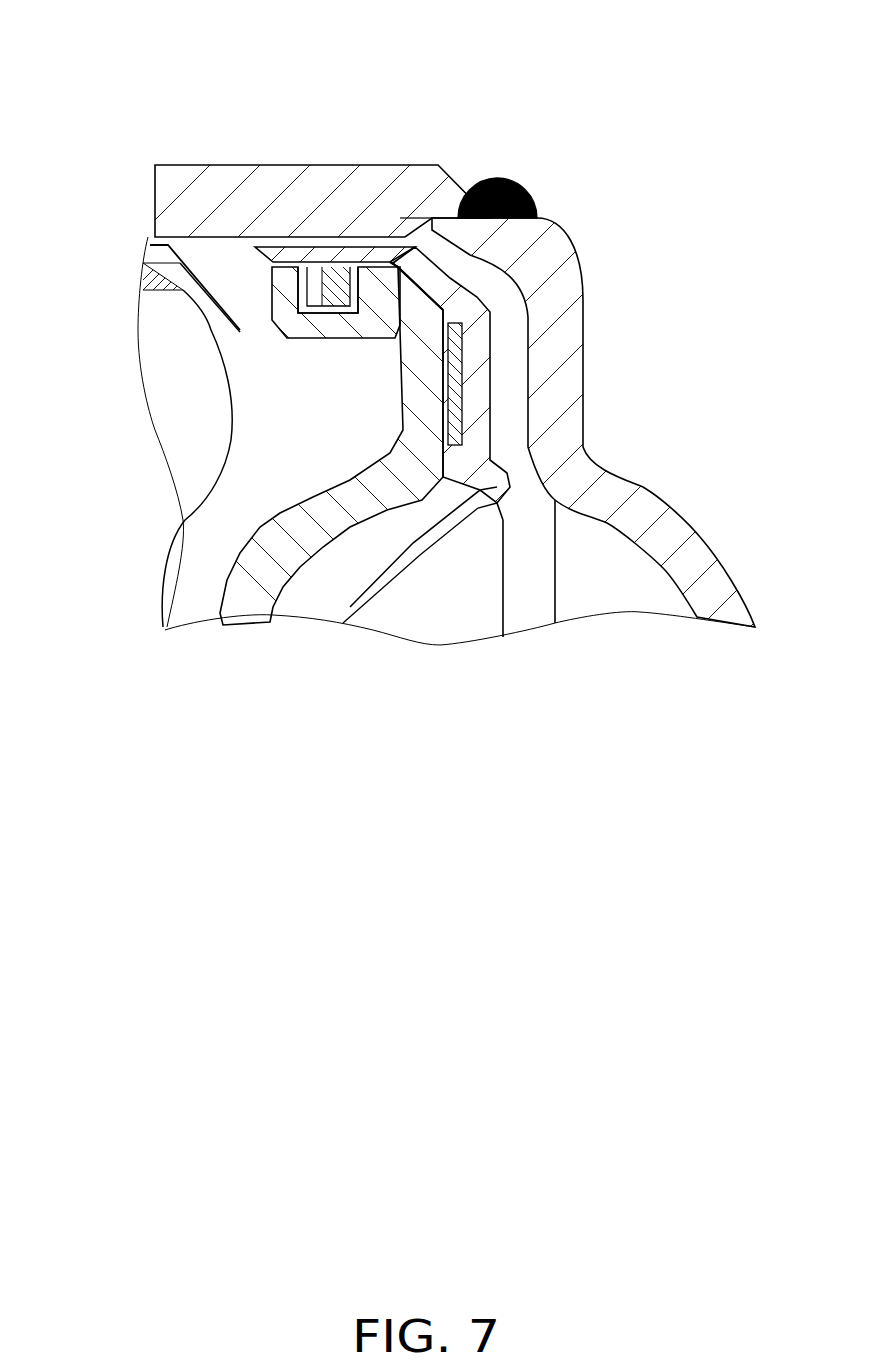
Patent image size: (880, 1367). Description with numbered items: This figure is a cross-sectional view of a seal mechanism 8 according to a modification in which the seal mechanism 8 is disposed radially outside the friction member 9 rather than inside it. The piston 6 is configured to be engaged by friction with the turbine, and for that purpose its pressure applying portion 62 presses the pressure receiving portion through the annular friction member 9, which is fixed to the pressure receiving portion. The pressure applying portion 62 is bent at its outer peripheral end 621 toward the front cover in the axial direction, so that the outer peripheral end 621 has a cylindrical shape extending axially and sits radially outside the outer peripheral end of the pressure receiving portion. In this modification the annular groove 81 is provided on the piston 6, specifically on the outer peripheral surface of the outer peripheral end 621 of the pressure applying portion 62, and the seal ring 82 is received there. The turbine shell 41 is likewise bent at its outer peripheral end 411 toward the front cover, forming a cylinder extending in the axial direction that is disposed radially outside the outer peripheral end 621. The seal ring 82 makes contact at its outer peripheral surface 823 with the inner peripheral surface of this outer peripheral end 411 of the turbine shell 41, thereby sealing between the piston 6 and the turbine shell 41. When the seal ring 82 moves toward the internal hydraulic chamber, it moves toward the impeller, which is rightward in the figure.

The outer peripheral end of the turbine shell 411 is at (324, 143).
The seal mechanism 8 is at (334, 155).
The seal ring 82 is at (497, 283).
The outer peripheral surface of the seal ring 823 is at (488, 144).
The annular groove 81 is at (333, 307).
The outer peripheral end of the pressure applying portion 621 is at (300, 327).
The pressure applying portion 62 is at (398, 407).
The piston 6 is at (227, 587).
The friction member 9 is at (457, 437).
The turbine shell 41 is at (377, 593).